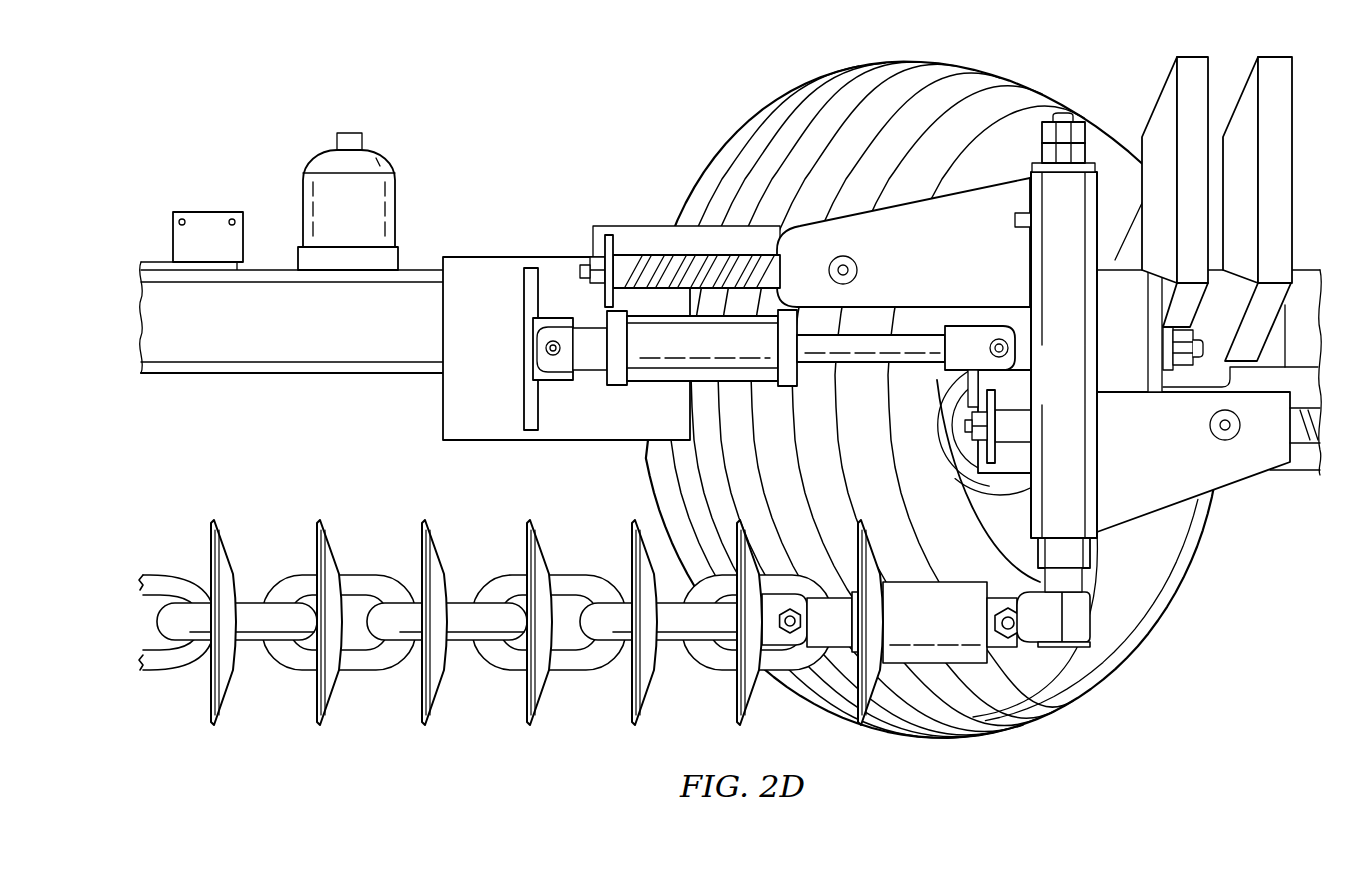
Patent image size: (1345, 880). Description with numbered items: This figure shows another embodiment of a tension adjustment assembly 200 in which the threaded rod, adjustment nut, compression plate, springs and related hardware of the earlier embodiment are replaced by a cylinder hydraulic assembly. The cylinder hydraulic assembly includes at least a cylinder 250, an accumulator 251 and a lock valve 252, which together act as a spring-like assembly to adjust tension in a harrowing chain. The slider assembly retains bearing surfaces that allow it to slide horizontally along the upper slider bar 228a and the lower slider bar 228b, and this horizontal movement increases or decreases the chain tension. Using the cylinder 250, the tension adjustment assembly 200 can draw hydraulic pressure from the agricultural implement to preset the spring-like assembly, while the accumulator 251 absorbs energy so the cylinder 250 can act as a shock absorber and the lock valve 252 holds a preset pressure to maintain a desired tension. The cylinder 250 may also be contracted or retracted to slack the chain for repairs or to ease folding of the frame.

The tension adjustment assembly 200 is at (306, 86).
The lock valve 252 is at (207, 210).
The accumulator 251 is at (395, 195).
The upper slider bar 228a is at (660, 252).
The lower slider bar 228b is at (1018, 407).
The cylinder 250 is at (658, 387).